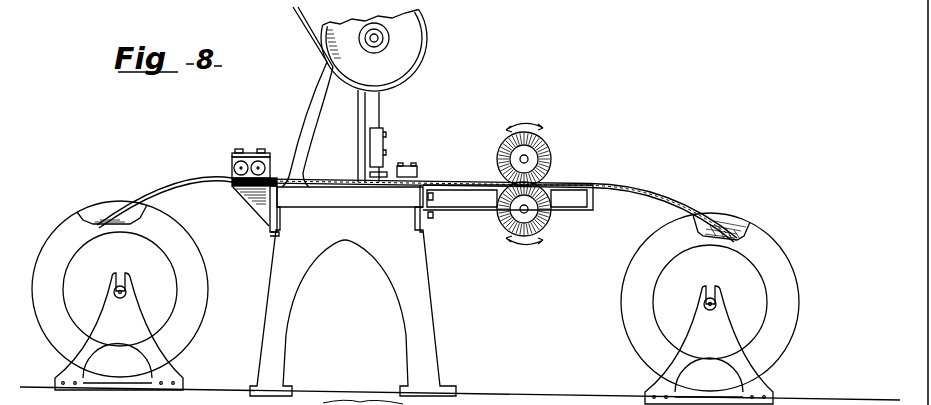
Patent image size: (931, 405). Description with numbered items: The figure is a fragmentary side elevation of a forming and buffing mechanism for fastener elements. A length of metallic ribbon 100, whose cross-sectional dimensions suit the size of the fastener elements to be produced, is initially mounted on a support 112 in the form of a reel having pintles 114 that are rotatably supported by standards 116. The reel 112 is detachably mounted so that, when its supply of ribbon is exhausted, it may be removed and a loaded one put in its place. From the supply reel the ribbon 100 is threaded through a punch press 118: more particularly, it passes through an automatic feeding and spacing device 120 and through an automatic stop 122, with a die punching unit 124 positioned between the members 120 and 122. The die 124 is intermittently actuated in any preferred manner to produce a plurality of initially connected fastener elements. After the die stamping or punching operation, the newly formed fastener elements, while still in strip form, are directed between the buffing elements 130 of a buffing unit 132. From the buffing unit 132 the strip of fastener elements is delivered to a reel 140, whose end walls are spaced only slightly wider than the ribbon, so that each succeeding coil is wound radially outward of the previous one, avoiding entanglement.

The metallic ribbon 100 is at (208, 179).
The support 112 is at (185, 335).
The pintles 114 is at (115, 290).
The standards 116 is at (119, 331).
The punch press 118 is at (353, 291).
The automatic feeding and spacing device 120 is at (232, 163).
The automatic stop 122 is at (408, 164).
The die punching unit 124 is at (372, 157).
The buffing elements 130 is at (547, 154).
The buffing unit 132 is at (553, 175).
The reel 140 is at (710, 302).